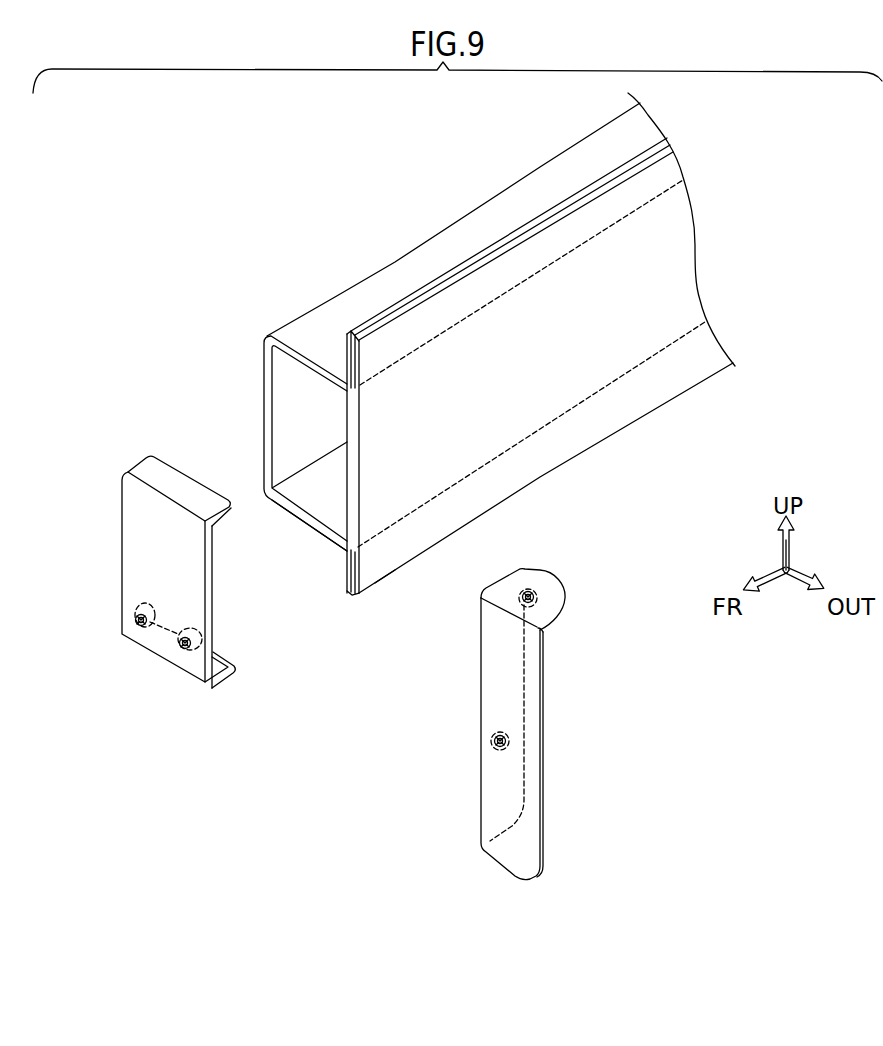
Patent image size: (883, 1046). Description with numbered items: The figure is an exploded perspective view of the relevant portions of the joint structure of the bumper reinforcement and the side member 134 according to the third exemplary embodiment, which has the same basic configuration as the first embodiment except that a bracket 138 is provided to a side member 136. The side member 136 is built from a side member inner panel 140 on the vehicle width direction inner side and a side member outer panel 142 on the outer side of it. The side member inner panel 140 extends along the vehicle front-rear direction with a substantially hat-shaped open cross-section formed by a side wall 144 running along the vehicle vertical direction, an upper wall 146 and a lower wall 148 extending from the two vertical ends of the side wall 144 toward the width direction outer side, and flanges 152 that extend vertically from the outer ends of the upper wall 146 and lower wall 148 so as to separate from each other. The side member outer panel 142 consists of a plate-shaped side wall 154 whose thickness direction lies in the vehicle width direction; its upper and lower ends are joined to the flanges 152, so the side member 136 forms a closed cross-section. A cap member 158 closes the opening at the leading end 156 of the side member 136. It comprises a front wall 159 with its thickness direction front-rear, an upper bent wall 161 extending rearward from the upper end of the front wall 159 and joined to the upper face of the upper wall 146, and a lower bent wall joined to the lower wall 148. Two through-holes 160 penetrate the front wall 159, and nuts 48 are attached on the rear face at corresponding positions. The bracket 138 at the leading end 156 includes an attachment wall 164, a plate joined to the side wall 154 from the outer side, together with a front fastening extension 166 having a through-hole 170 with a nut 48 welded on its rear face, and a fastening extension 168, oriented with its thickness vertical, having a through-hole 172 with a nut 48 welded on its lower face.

The joint structure of the bumper reinforcement and the side member 134 is at (340, 203).
The side member 136 is at (413, 233).
The bracket 138 is at (560, 583).
The side member inner panel 140 is at (282, 326).
The side member outer panel 142 is at (462, 392).
The side wall 144 is at (284, 411).
The upper wall 146 is at (325, 335).
The lower wall 148 is at (307, 521).
The flanges 152 is at (378, 313).
The side wall 154 is at (380, 443).
The leading end 156 is at (383, 567).
The cap member 158 is at (133, 578).
The front wall 159 is at (133, 517).
The through-holes 160 is at (183, 647).
The upper bent wall 161 is at (163, 468).
The attachment wall 164 is at (492, 687).
The front fastening extension 166 is at (488, 800).
The fastening extension 168 is at (502, 593).
The through-hole 170 is at (494, 745).
The through-hole 172 is at (528, 592).
The nuts 48 is at (192, 625).